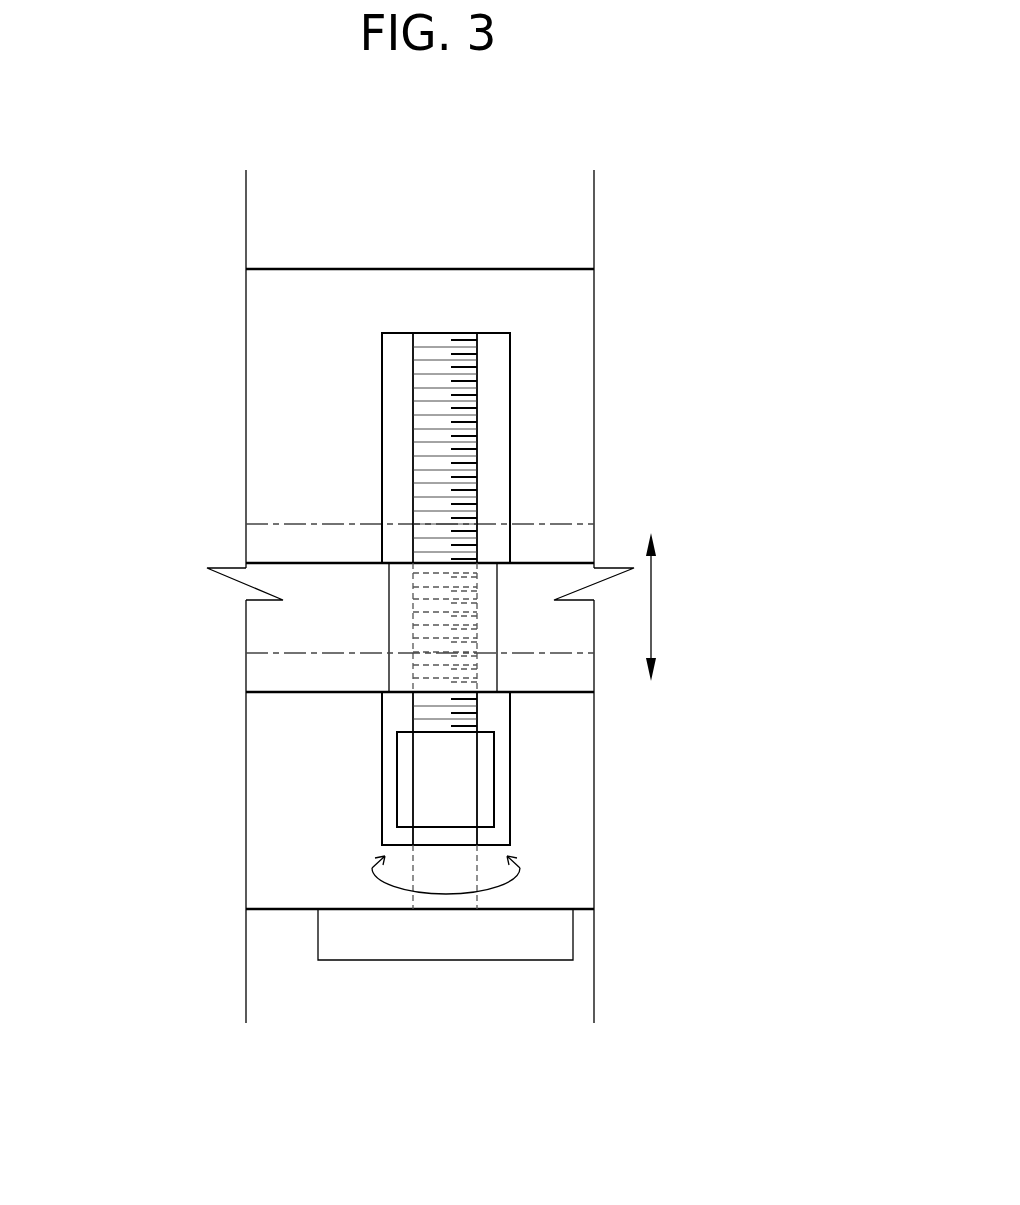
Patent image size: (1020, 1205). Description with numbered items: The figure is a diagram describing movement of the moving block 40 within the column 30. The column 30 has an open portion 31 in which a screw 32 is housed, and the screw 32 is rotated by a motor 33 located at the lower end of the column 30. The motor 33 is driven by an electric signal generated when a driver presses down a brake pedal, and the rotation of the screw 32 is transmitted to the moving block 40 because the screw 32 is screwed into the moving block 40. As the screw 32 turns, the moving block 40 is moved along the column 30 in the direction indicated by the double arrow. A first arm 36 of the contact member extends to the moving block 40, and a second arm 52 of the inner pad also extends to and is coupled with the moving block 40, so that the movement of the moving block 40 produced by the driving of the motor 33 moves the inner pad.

The column 30 is at (528, 252).
The open portion 31 is at (500, 372).
The screw 32 is at (463, 412).
The motor 33 is at (486, 940).
The first arm 36 is at (270, 675).
The moving block 40 is at (396, 540).
The second arm 52 is at (577, 678).